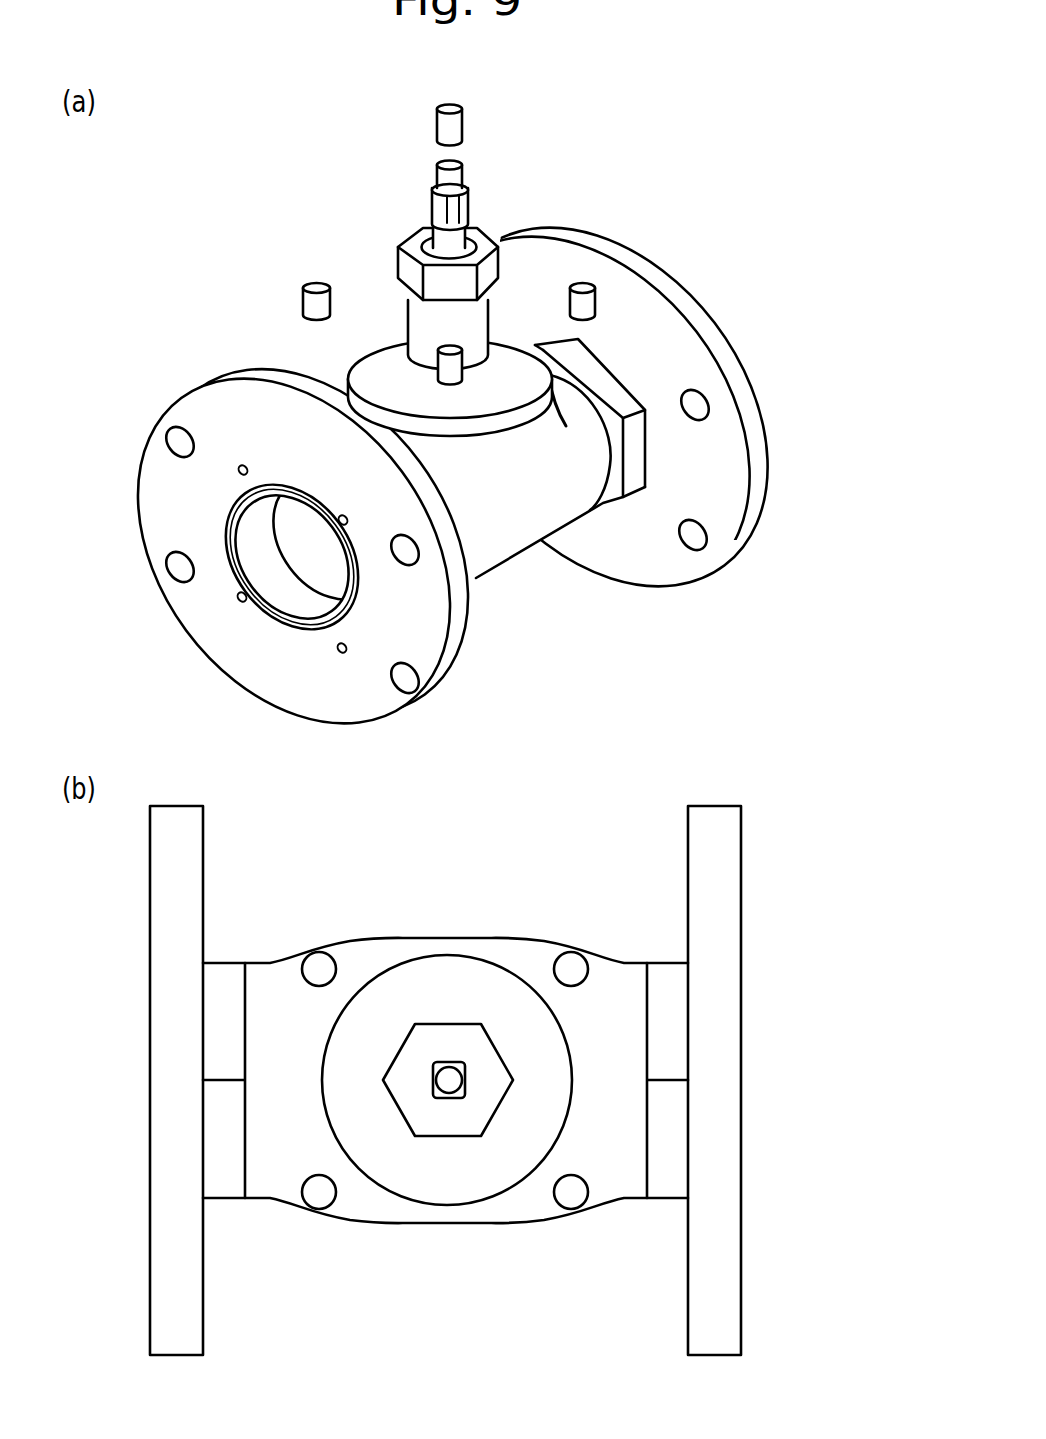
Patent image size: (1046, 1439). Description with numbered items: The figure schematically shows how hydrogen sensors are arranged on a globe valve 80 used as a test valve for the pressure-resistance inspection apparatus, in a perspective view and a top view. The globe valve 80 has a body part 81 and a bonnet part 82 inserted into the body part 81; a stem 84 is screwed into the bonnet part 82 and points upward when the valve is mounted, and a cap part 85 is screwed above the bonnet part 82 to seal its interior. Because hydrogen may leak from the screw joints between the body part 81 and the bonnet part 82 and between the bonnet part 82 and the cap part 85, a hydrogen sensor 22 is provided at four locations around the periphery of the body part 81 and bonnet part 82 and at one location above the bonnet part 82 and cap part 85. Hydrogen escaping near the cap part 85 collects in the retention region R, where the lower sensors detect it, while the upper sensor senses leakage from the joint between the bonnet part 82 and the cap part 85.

The hydrogen sensor 22 is at (463, 113).
The globe valve 80 is at (770, 444).
The body part 81 is at (550, 498).
The bonnet part 82 is at (390, 357).
The stem 84 is at (452, 233).
The cap part 85 is at (417, 248).
The retention region R is at (503, 291).